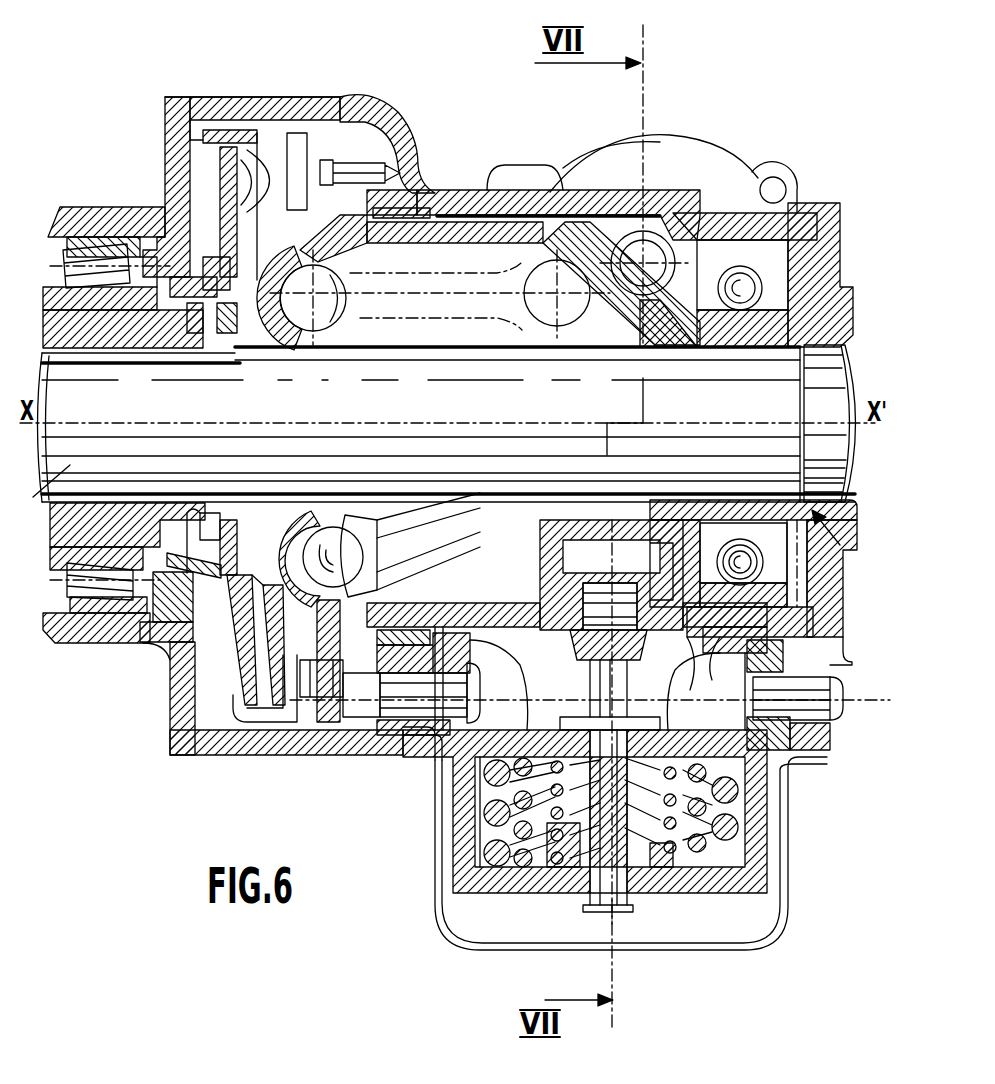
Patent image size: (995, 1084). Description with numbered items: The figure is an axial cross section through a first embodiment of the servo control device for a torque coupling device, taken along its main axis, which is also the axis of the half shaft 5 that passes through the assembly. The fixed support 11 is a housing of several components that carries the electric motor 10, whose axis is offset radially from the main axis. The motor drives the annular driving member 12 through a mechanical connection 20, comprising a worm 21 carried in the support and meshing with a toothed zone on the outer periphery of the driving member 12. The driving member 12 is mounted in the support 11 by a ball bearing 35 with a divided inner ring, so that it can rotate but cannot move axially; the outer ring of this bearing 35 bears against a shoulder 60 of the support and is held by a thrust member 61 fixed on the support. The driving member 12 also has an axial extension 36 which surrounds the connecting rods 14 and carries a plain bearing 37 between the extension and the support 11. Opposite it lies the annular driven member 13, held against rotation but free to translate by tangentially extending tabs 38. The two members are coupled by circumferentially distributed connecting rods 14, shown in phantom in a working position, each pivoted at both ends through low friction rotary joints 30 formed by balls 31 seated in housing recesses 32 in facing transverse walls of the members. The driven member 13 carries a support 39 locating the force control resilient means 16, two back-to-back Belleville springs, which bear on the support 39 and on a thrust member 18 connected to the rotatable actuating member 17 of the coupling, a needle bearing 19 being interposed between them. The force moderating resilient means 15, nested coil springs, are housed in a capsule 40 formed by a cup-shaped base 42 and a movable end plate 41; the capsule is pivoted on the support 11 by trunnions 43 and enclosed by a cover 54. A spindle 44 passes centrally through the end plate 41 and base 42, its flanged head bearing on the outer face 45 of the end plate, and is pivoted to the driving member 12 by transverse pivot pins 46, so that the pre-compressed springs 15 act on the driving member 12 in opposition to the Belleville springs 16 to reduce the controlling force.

The half shaft 5 is at (447, 494).
The electric motor 10 is at (720, 163).
The fixed support 11 is at (333, 92).
The driving member 12 is at (623, 338).
The driven member 13 is at (272, 348).
The connecting rods 14 is at (433, 330).
The first resilient means 15 is at (480, 843).
The second resilient means 16 is at (222, 656).
The rotatable actuating member 17 is at (150, 347).
The thrust member 18 is at (262, 629).
The needle bearing 19 is at (216, 537).
The mechanical connection 20 is at (665, 228).
The worm 21 is at (632, 150).
The low friction rotary joints 30 is at (323, 338).
The balls 31 is at (550, 258).
The housing elements 32 is at (445, 222).
The ball bearing 35 is at (775, 252).
The axial extension 36 is at (472, 213).
The plain bearing 37 is at (425, 210).
The tangentially extending tabs 38 is at (347, 99).
The support 39 is at (233, 130).
The capsule 40 is at (682, 903).
The end plate 41 is at (688, 695).
The hollow cup-shaped base 42 is at (480, 918).
The trunnions 43 is at (403, 710).
The spindle 44 is at (587, 903).
The outer face 45 is at (527, 730).
The transverse pivot pins 46 is at (541, 585).
The cover 54 is at (760, 947).
The shoulder 60 is at (722, 637).
The thrust member 61 is at (850, 663).